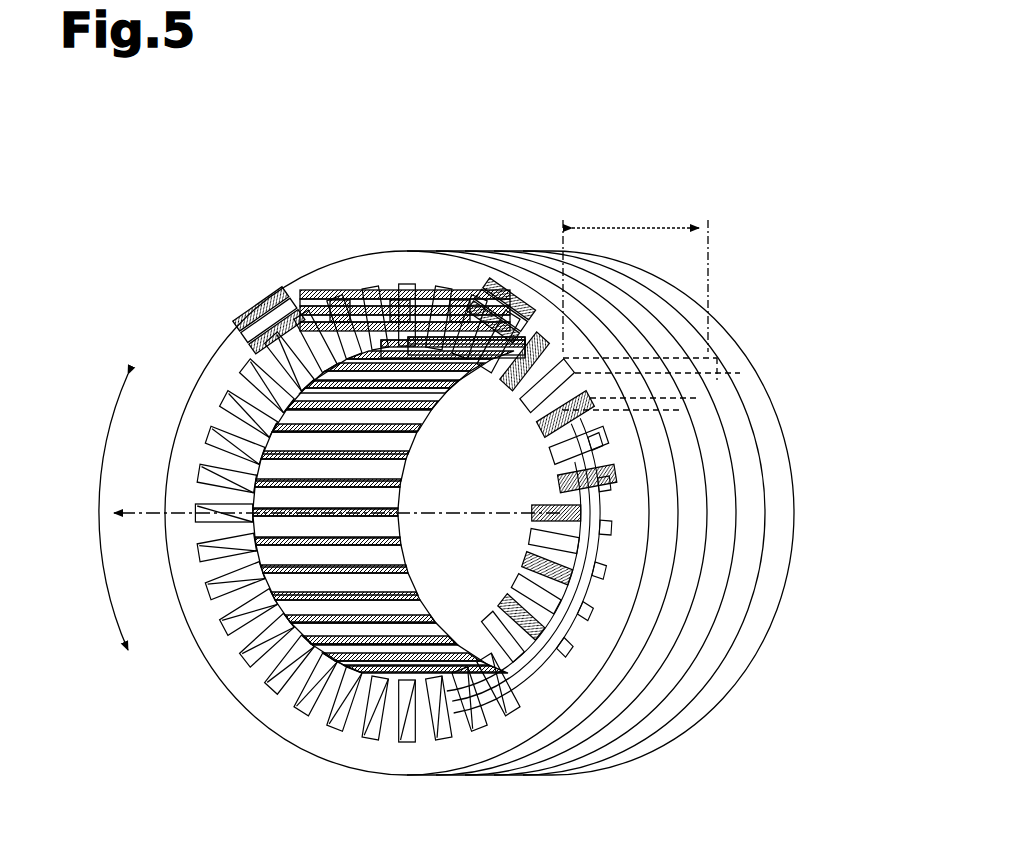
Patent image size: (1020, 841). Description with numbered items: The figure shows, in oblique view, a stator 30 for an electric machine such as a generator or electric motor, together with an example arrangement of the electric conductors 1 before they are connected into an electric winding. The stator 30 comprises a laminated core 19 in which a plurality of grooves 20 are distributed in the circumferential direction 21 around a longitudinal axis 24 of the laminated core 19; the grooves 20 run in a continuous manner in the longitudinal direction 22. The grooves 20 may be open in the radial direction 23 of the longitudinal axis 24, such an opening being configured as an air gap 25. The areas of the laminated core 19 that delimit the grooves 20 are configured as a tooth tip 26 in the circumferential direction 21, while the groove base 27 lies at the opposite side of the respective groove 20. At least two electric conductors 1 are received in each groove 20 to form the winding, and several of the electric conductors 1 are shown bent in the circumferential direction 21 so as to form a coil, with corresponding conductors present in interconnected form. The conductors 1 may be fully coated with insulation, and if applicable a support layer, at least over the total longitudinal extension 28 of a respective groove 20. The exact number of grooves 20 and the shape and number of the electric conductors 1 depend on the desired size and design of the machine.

The electric conductor 1 is at (265, 312).
The laminated core 19 is at (738, 433).
The groove 20 is at (475, 284).
The circumferential direction 21 is at (98, 500).
The longitudinal direction 22 is at (144, 520).
The radial direction 23 is at (335, 468).
The longitudinal axis 24 is at (432, 516).
The air gap 25 is at (403, 508).
The tooth tip 26 is at (577, 398).
The groove base 27 is at (505, 345).
The total longitudinal extension 28 is at (638, 228).
The stator 30 is at (784, 277).